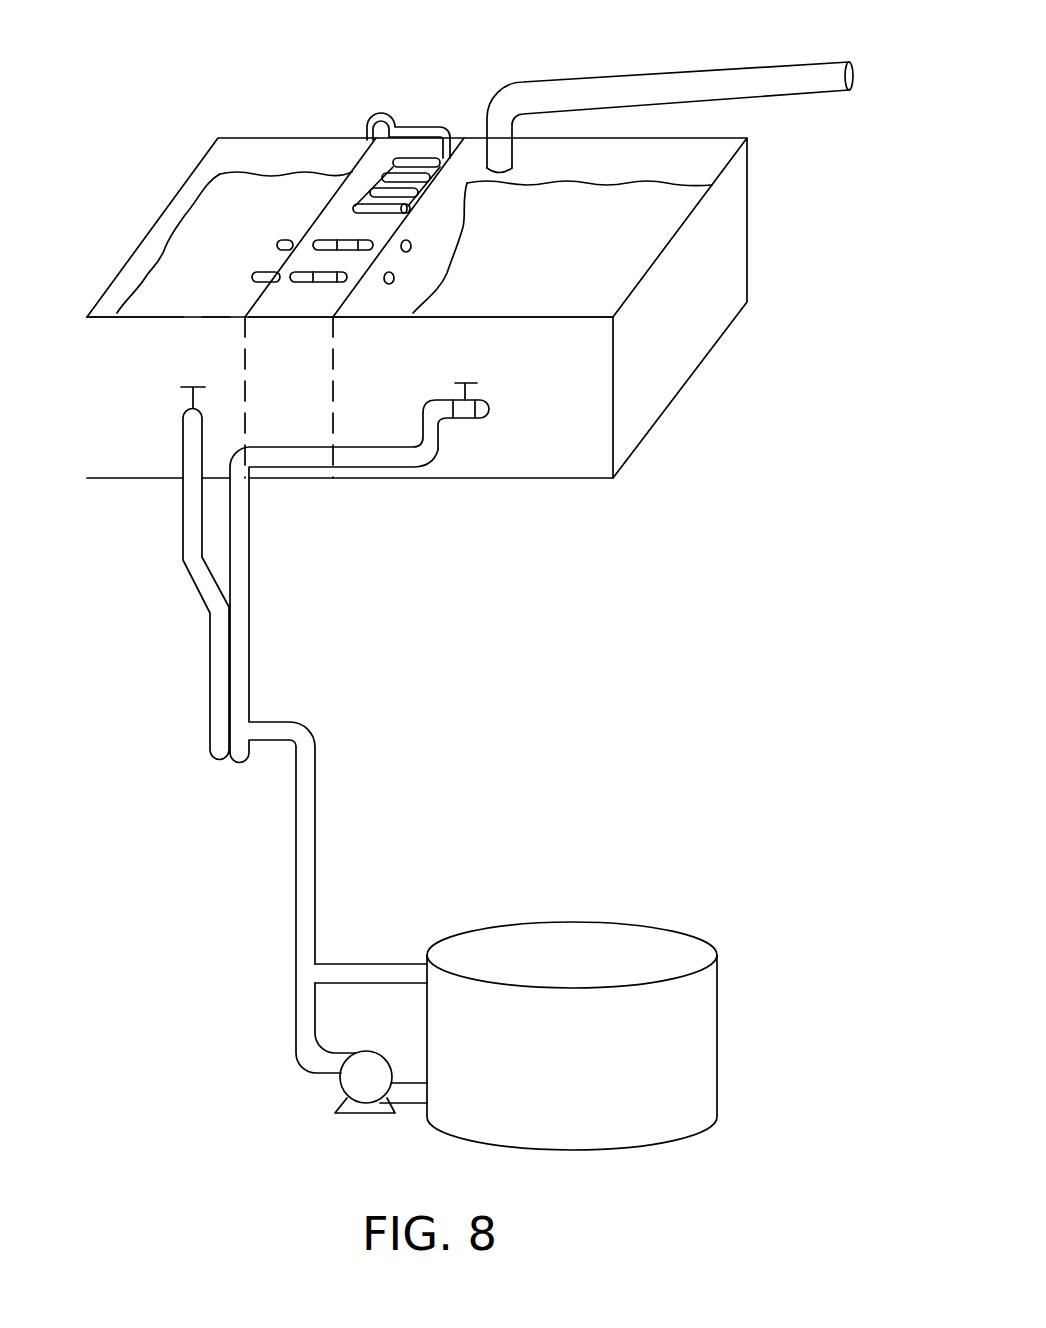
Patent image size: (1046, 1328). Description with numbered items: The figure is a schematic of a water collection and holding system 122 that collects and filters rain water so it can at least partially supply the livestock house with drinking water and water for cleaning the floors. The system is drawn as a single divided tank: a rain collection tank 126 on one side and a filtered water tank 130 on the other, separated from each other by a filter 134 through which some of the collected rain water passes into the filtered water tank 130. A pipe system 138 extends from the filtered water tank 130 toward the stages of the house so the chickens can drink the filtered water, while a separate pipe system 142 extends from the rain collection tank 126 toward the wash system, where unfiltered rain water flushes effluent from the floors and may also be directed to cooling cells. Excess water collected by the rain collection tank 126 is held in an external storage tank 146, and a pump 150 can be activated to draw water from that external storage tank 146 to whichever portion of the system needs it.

The water collection and holding system 122 is at (141, 101).
The rain collection tank 126 is at (653, 228).
The filtered water tank 130 is at (182, 273).
The filter 134 is at (348, 243).
The pipe system 138 is at (195, 450).
The pipe system 142 is at (239, 552).
The external storage tank 146 is at (598, 942).
The pump 150 is at (353, 1082).